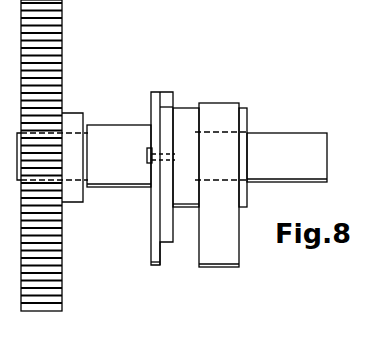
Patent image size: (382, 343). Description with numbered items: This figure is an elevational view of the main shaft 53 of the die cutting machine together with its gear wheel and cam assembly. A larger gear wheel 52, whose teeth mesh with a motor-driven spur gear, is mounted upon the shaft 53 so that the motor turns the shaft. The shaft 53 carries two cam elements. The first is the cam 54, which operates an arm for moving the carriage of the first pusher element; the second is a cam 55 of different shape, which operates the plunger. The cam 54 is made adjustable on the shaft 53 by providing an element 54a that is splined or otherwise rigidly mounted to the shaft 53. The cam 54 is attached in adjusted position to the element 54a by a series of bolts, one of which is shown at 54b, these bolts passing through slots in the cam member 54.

The gear wheel 52 is at (61, 286).
The shaft 53 is at (302, 165).
The cam 54 is at (155, 265).
The element 54a is at (170, 239).
The bolt 54b is at (147, 152).
The cam 55 is at (225, 257).